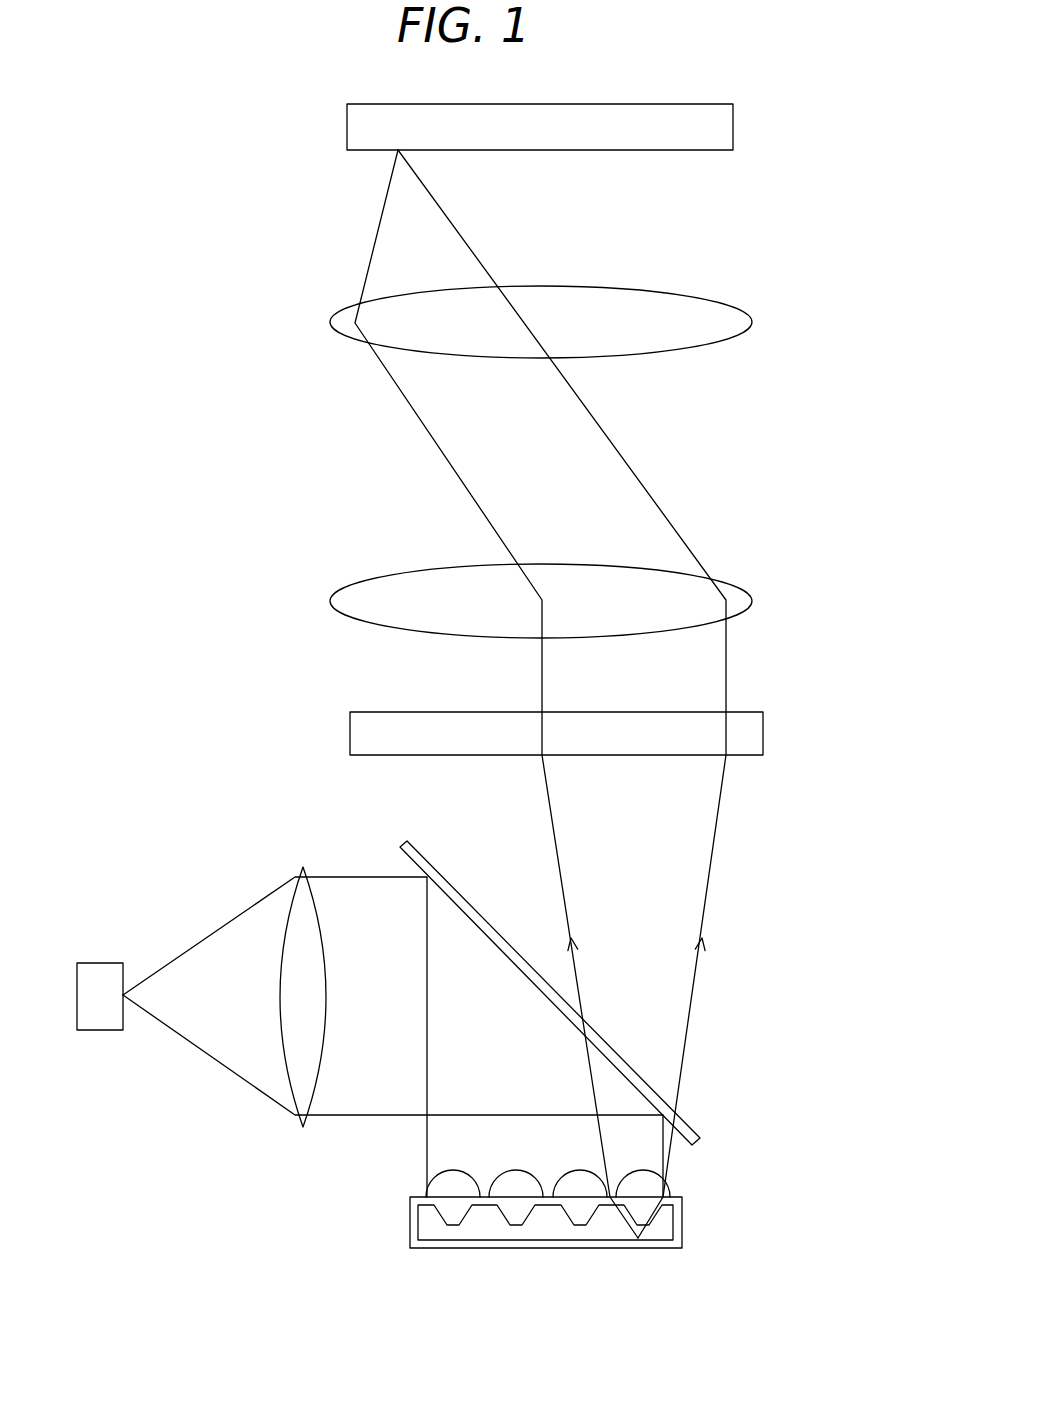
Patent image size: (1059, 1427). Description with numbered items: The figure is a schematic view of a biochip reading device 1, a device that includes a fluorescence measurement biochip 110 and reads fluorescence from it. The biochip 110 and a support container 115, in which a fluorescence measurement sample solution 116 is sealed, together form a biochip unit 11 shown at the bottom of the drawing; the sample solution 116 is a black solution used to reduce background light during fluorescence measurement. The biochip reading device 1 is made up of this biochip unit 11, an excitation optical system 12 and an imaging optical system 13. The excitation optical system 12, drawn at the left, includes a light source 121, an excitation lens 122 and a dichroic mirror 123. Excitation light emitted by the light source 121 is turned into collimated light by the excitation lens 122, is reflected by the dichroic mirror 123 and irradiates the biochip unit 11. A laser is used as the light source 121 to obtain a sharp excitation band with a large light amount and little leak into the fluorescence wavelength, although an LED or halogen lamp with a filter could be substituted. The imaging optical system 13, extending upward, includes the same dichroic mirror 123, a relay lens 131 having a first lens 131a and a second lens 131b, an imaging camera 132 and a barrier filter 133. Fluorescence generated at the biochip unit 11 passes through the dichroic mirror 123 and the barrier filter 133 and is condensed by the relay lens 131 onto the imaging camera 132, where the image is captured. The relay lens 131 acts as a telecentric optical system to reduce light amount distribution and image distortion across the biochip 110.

The biochip reading device 1 is at (139, 309).
The biochip unit 11 is at (715, 1210).
The excitation optical system 12 is at (207, 877).
The imaging optical system 13 is at (768, 182).
The biochip 110 is at (675, 1195).
The support container 115 is at (617, 1248).
The sample solution 116 is at (547, 1220).
The light source 121 is at (103, 963).
The excitation lens 122 is at (303, 1130).
The dichroic mirror 123 is at (637, 1073).
The relay lens 131 is at (788, 258).
The first lens 131a is at (733, 583).
The second lens 131b is at (733, 303).
The imaging camera 132 is at (690, 104).
The barrier filter 133 is at (745, 712).